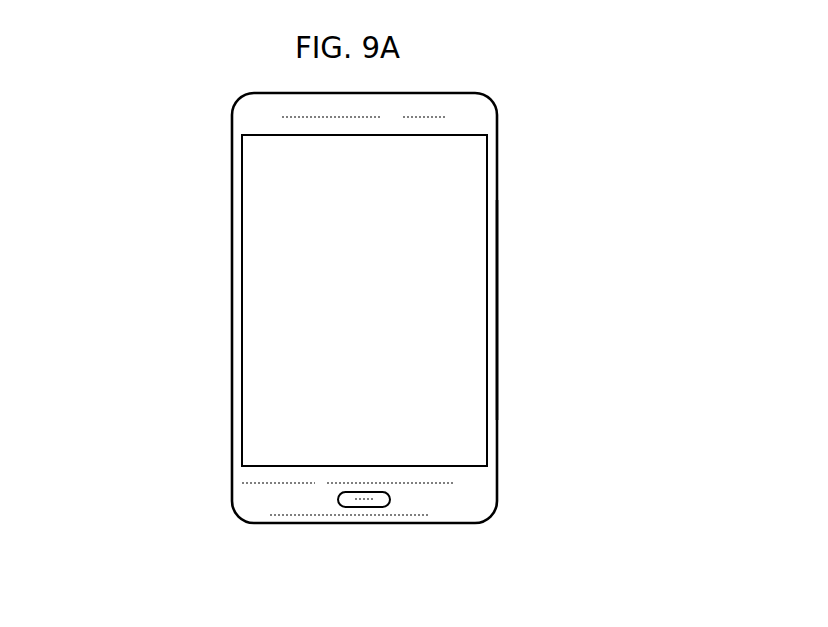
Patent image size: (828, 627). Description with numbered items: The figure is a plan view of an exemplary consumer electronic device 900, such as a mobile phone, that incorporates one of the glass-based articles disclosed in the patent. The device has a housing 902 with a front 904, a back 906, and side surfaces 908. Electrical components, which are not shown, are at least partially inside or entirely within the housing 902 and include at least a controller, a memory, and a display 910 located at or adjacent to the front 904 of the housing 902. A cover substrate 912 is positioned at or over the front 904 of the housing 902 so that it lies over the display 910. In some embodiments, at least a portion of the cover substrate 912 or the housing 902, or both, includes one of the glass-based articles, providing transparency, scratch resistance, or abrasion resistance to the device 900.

The consumer electronic device 900 is at (521, 144).
The housing 902 is at (250, 115).
The front surface 904 is at (470, 502).
The back surface 906 is at (270, 255).
The side surfaces 908 is at (497, 345).
The display 910 is at (433, 262).
The cover substrate 912 is at (278, 367).